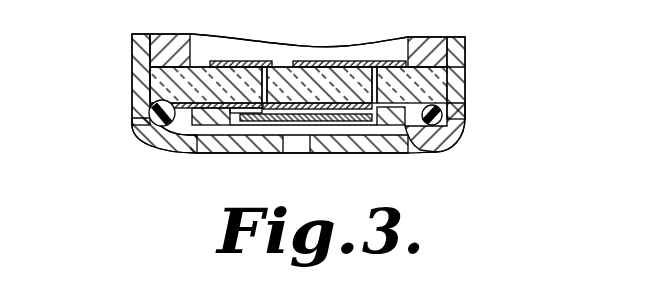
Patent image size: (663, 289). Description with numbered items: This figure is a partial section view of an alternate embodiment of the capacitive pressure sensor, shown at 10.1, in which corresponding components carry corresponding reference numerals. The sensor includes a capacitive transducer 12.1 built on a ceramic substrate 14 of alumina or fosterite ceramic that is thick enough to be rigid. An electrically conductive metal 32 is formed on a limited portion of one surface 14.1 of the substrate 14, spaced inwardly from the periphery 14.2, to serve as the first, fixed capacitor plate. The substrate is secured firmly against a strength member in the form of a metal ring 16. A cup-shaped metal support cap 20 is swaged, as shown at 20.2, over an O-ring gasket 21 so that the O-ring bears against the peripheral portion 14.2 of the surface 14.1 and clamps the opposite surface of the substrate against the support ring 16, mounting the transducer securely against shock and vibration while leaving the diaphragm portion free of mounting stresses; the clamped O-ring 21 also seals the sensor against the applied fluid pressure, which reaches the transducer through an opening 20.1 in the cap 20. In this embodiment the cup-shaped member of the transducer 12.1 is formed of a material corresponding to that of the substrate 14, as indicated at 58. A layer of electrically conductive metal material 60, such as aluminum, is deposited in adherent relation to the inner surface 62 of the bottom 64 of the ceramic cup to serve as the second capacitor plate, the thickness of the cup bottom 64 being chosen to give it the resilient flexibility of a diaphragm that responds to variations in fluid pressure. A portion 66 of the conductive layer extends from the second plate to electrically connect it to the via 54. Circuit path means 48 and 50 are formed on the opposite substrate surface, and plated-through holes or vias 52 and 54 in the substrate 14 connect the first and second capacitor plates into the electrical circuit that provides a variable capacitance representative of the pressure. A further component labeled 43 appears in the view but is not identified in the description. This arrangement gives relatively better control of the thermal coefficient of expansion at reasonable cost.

The sensor 10.1 is at (467, 56).
The capacitive transducer 12.1 is at (434, 90).
The ceramic substrate 14 is at (150, 80).
The one surface of the substrate 14.1 is at (233, 137).
The periphery of the substrate 14.2 is at (154, 103).
The metal ring 16 is at (164, 34).
The cup-shaped metal support cap 20 is at (142, 48).
The opening 20.1 is at (303, 137).
The swaged portion of the cap 20.2 is at (428, 152).
The O-ring gasket 21 is at (132, 125).
The electrically conductive metal 32 is at (374, 68).
The seal ring 43 is at (160, 143).
The circuit path means 48 is at (244, 61).
The circuit path means 50 is at (342, 61).
The via 52 is at (266, 70).
The via 54 is at (411, 66).
The ceramic cup-shaped member 58 is at (188, 138).
The layer of electrically conductive metal material 60 is at (347, 113).
The inner surface of the cup bottom 62 is at (365, 122).
The bottom of the ceramic cup 64 is at (275, 122).
The extending portion of the conductive metal layer 66 is at (400, 127).